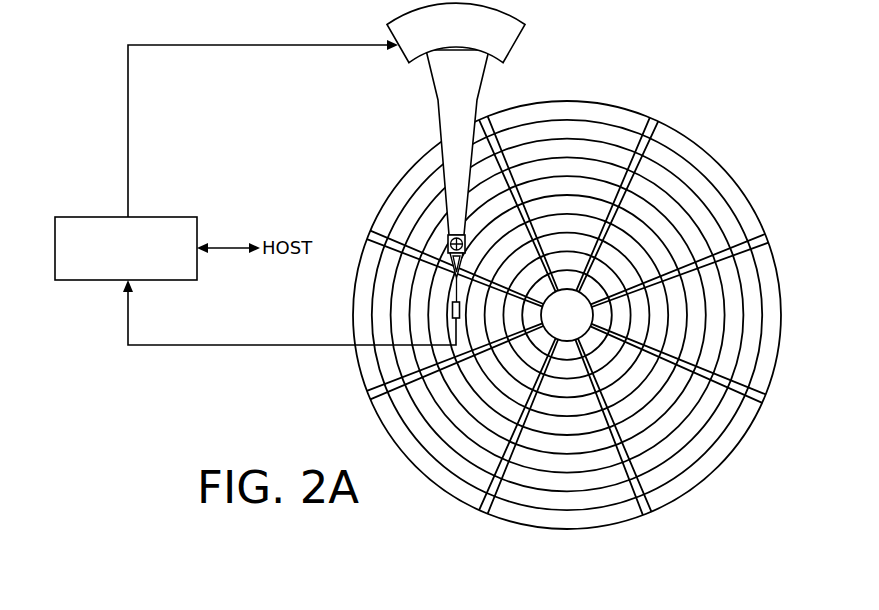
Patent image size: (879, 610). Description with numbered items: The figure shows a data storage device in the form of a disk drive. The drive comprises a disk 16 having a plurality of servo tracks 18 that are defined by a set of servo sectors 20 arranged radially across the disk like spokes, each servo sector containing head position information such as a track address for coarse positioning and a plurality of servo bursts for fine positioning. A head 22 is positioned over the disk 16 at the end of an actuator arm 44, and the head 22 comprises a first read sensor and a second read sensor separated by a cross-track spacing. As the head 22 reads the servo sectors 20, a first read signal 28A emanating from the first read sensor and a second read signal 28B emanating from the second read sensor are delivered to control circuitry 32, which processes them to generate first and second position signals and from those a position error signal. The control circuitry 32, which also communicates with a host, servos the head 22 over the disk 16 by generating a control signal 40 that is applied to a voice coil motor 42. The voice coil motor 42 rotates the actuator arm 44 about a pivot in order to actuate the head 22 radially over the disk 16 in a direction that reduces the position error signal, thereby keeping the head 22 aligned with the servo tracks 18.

The disk 16 is at (719, 149).
The servo tracks 18 is at (566, 130).
The servo sectors 20 is at (572, 321).
The head 22 is at (444, 320).
The first read signal 28A is at (289, 336).
The second read signal 28B is at (256, 347).
The control circuitry 32 is at (167, 217).
The control signal 40 is at (128, 113).
The voice coil motor 42 is at (406, 63).
The actuator arm 44 is at (438, 117).